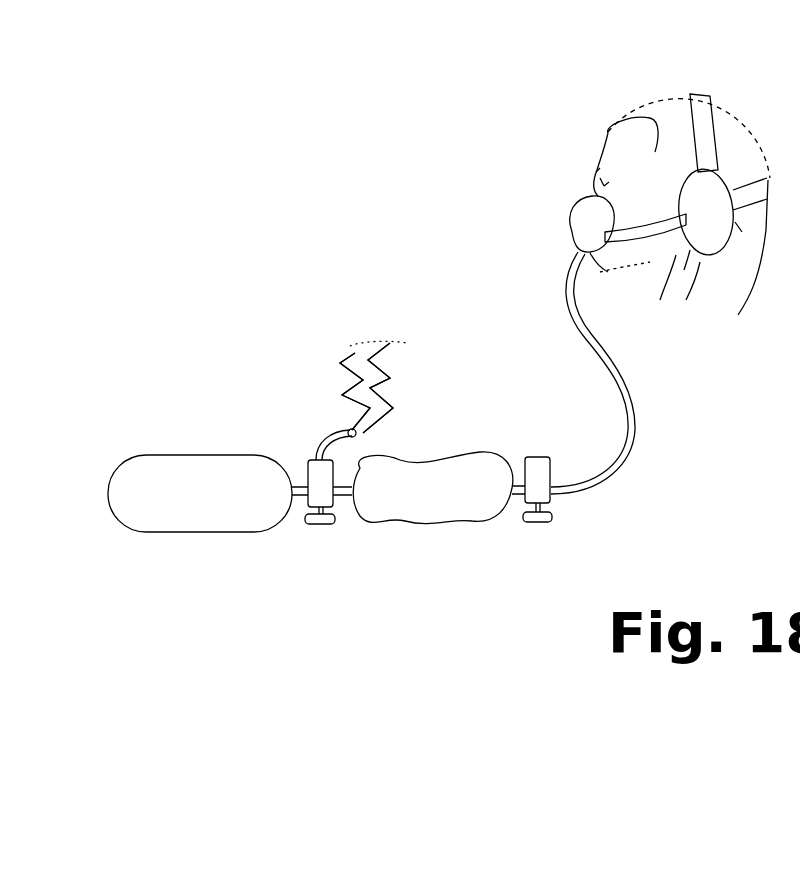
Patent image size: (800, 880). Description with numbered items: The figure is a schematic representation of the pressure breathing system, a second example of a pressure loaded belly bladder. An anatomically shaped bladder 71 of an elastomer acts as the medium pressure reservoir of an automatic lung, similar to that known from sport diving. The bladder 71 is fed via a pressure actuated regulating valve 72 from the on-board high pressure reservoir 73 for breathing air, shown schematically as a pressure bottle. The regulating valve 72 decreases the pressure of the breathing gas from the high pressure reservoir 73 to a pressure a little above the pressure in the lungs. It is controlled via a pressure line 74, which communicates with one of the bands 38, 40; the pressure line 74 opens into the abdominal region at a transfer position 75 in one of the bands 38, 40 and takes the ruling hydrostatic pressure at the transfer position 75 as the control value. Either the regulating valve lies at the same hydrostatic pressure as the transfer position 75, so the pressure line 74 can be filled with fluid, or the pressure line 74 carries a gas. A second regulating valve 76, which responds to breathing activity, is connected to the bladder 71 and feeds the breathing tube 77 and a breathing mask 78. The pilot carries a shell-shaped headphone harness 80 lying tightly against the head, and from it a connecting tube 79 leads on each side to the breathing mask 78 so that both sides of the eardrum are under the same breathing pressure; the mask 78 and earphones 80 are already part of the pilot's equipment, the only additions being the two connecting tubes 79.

The band 38 is at (356, 356).
The band 40 is at (356, 356).
The bladder 71 is at (430, 490).
The regulating valve 72 is at (320, 490).
The high pressure reservoir 73 is at (200, 477).
The pressure line 74 is at (318, 440).
The transfer position 75 is at (350, 429).
The second regulating valve 76 is at (538, 488).
The breathing tube 77 is at (628, 428).
The breathing mask 78 is at (575, 223).
The connecting tube 79 is at (637, 233).
The headphone harness 80 is at (700, 193).